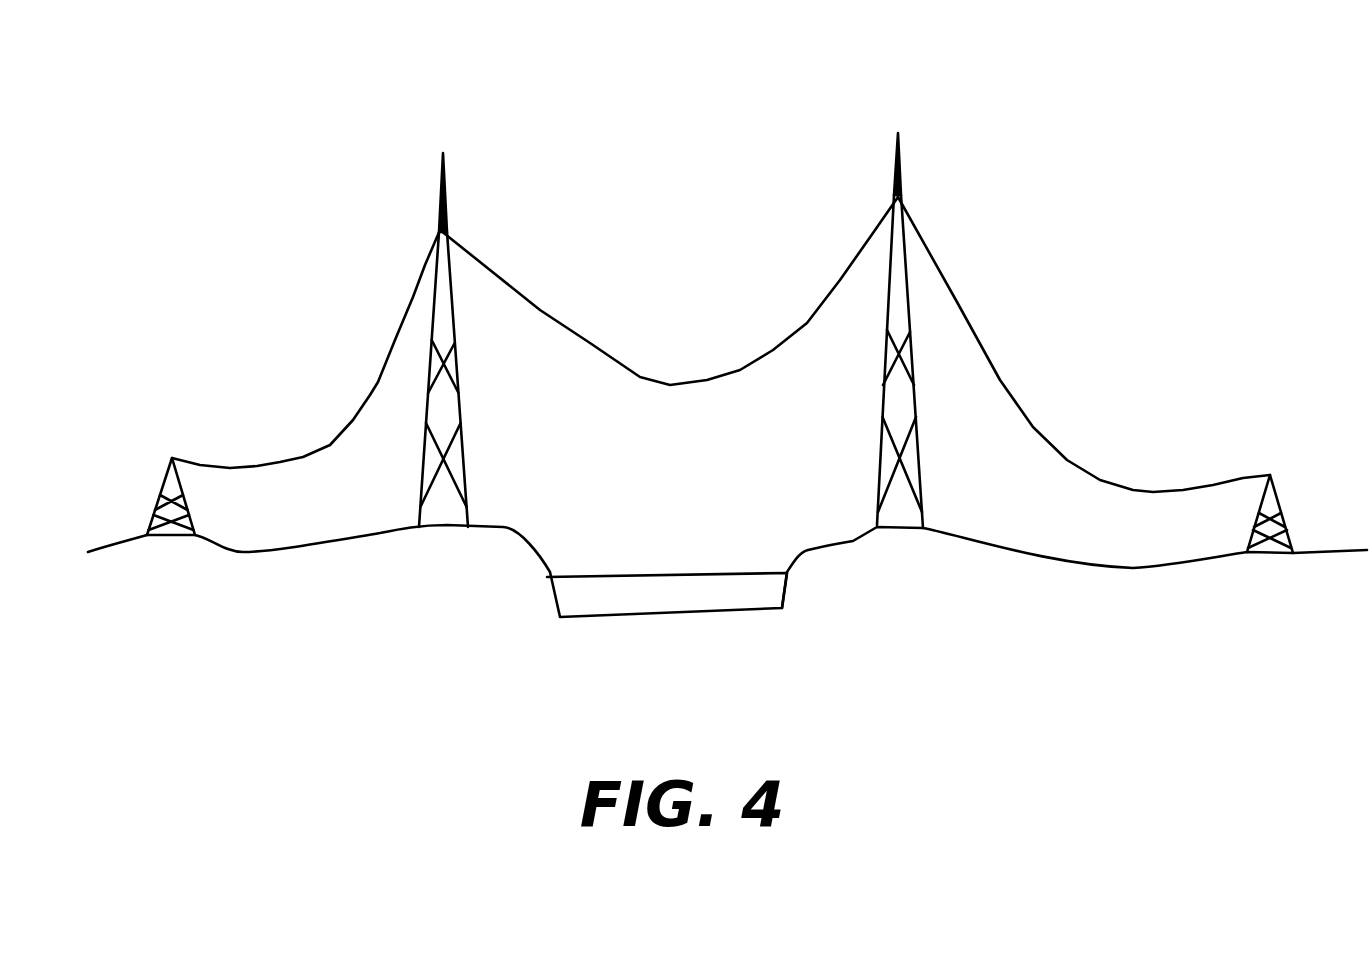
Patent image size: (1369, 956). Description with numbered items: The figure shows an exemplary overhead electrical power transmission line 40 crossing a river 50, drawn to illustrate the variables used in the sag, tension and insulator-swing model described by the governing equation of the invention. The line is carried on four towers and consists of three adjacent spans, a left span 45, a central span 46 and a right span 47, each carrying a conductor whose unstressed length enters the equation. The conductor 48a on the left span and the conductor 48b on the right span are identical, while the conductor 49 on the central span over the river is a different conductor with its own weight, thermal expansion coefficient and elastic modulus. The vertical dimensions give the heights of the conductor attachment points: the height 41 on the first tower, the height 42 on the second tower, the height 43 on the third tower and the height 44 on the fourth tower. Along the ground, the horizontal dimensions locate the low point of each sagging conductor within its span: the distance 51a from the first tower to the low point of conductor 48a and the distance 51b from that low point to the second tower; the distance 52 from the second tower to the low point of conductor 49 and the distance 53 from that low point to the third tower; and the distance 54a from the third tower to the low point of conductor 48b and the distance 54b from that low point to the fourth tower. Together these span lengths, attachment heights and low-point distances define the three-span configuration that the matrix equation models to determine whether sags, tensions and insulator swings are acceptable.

The overhead electrical power transmission line 40 is at (118, 206).
The height of conductor attachment point on first tower 41 is at (87, 458).
The height of conductor attachment point on second tower 42 is at (378, 547).
The height of conductor attachment point on third tower 43 is at (852, 545).
The height of conductor attachment point on fourth tower 44 is at (1315, 470).
The span 45 is at (443, 92).
The span 46 is at (902, 63).
The span 47 is at (1266, 63).
The conductor 48a is at (302, 457).
The conductor 48b is at (1105, 482).
The conductor 49 is at (672, 383).
The river 50 is at (610, 617).
The horizontal distance from first tower to low point on conductor 51a is at (171, 607).
The horizontal distance from low point on conductor to second tower 51b is at (443, 607).
The horizontal distance from second tower to low point on conductor 52 is at (707, 607).
The horizontal distance from low point on conductor to third tower 53 is at (903, 607).
The horizontal distance from third tower to low point on conductor 54a is at (1115, 607).
The horizontal distance from low point on conductor to fourth tower 54b is at (1268, 607).